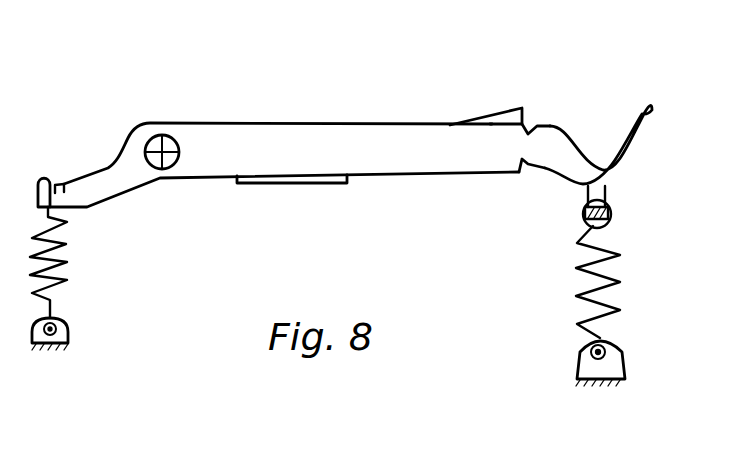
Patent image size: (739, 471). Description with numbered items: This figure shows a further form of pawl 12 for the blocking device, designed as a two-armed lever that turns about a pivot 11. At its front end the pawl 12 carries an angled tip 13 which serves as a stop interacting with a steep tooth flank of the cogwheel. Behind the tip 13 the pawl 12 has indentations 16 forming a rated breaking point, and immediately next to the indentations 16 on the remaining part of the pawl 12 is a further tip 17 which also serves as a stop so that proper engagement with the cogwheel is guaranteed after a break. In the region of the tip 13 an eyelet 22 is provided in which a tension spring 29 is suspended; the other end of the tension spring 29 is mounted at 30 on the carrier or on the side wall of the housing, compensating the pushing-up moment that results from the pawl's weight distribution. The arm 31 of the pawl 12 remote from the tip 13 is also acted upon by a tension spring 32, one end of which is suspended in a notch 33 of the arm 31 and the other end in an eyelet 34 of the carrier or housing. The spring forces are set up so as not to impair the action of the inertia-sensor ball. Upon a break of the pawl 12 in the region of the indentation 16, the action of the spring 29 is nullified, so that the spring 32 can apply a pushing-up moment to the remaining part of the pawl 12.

The pivot 11 is at (172, 157).
The pawl 12 is at (320, 152).
The angled tip 13 is at (633, 138).
The indentations 16 is at (530, 121).
The further tip 17 is at (520, 110).
The eyelet 22 is at (584, 192).
The tension spring 29 is at (580, 283).
The spring mounting 30 is at (577, 362).
The arm 31 is at (122, 178).
The tension spring 32 is at (66, 280).
The notch 33 is at (60, 183).
The eyelet 34 is at (55, 343).